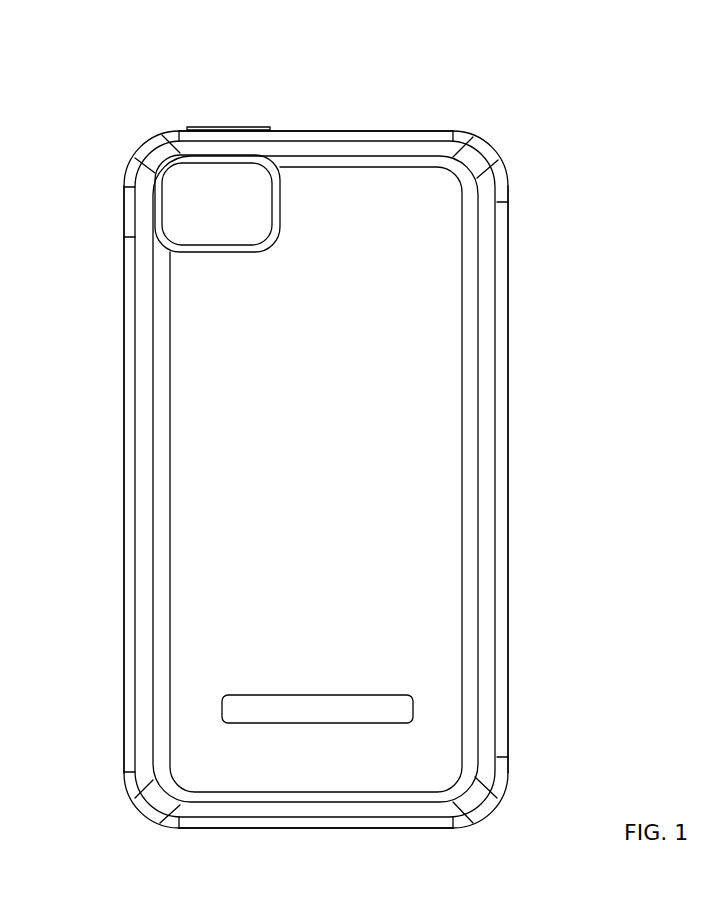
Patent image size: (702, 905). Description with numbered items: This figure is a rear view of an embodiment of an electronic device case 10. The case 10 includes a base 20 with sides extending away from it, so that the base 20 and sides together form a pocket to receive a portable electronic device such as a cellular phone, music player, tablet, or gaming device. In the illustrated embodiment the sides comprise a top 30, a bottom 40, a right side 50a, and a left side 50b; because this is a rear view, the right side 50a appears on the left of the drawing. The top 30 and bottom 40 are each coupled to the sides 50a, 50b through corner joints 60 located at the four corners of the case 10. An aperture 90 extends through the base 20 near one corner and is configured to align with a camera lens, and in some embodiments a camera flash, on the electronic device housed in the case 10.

The case 10 is at (347, 448).
The base 20 is at (305, 431).
The top 30 is at (320, 120).
The bottom 40 is at (310, 828).
The right side 50a is at (128, 378).
The left side 50b is at (511, 378).
The corner joints 60 is at (142, 148).
The aperture 90 is at (205, 200).